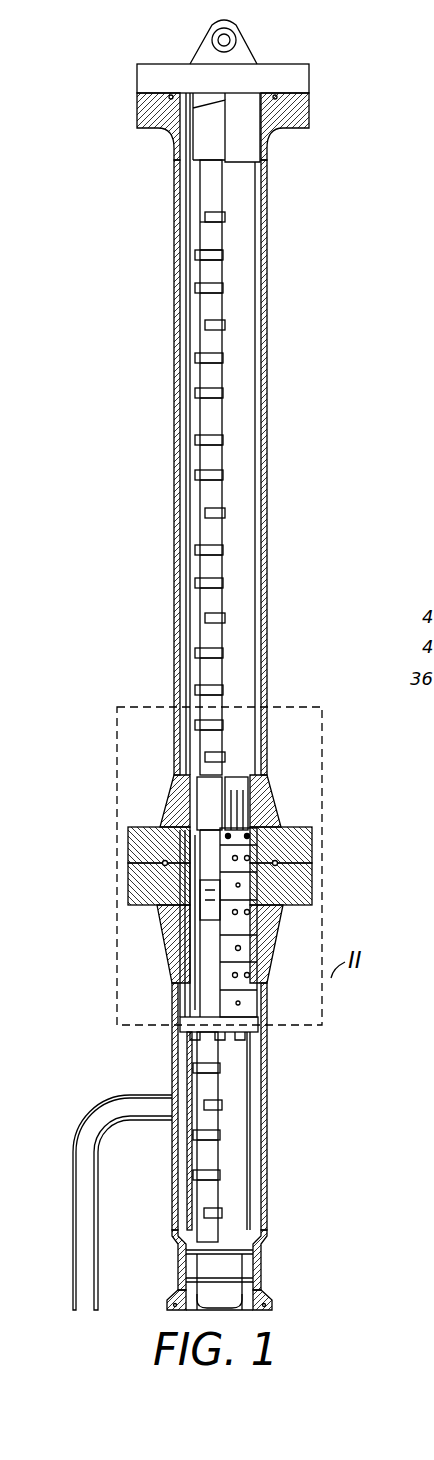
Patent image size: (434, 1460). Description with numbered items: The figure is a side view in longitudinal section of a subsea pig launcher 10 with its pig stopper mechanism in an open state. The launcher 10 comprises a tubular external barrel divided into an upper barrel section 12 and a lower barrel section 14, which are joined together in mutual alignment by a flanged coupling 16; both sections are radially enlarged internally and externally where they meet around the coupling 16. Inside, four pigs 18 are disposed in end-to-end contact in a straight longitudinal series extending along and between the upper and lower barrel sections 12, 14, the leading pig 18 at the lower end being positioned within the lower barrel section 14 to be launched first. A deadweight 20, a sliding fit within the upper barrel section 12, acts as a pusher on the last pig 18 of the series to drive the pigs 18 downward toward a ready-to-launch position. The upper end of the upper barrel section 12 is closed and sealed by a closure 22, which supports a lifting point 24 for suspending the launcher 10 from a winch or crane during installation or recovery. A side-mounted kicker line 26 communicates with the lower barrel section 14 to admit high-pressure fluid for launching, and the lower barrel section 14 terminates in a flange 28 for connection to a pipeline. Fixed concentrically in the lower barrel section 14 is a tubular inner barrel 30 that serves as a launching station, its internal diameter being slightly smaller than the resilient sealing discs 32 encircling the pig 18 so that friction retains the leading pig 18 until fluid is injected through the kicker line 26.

The subsea pig launcher 10 is at (336, 160).
The upper barrel section 12 is at (267, 418).
The lower barrel section 14 is at (267, 1145).
The flanged coupling 16 is at (300, 845).
The pig 18 is at (210, 272).
The deadweight 20 is at (200, 173).
The closure 22 is at (310, 78).
The lifting point 24 is at (250, 30).
The kicker line 26 is at (100, 1118).
The flange 28 is at (272, 1302).
The inner barrel 30 is at (240, 1073).
The sealing disc 32 is at (258, 1245).